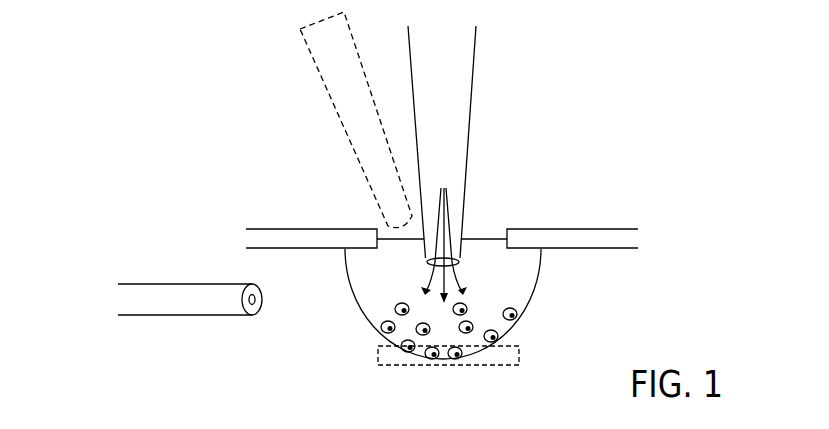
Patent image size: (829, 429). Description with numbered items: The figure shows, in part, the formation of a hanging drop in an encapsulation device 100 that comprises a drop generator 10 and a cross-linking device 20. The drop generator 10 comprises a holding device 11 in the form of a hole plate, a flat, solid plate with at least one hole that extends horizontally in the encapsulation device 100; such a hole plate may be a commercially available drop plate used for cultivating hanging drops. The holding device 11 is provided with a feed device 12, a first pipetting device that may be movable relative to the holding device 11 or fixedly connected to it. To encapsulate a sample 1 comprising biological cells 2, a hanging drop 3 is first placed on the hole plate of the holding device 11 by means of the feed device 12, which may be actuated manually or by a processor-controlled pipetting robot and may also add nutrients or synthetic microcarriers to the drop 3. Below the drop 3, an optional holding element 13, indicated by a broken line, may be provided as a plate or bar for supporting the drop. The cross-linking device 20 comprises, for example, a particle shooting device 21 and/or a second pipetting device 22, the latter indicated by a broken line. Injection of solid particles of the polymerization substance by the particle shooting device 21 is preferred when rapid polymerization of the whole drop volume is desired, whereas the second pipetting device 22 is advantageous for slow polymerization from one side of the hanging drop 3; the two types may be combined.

The encapsulation device 100 is at (684, 151).
The drop generator 10 is at (647, 125).
The holding device 11 is at (316, 240).
The feed device 12 is at (458, 104).
The second pipetting device 22 is at (353, 105).
The hanging drop 3 is at (518, 285).
The sample 1 is at (382, 331).
The biological cells 2 is at (409, 335).
The holding element 13 is at (505, 360).
The cross-linking device 20 is at (107, 275).
The particle shooting device 21 is at (203, 300).